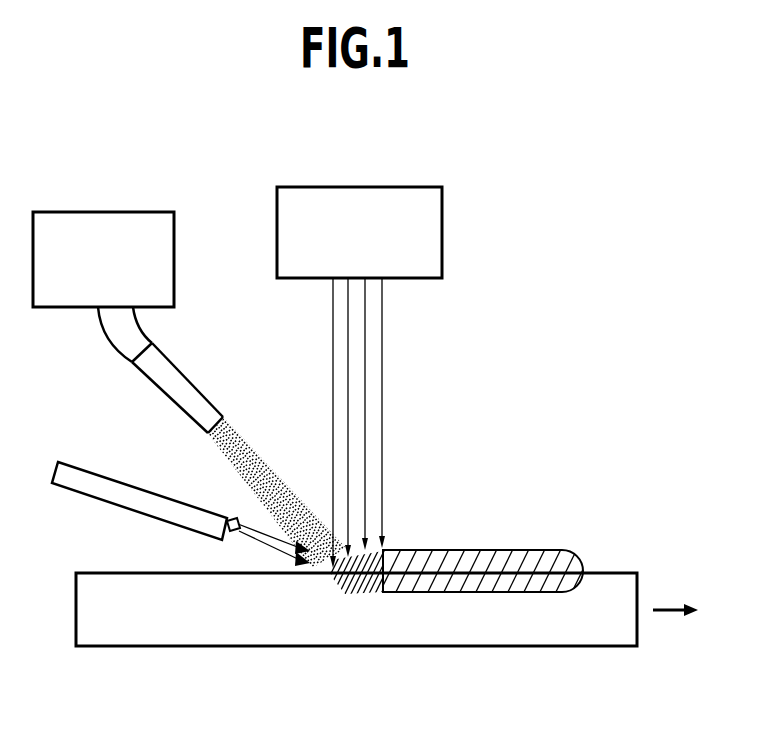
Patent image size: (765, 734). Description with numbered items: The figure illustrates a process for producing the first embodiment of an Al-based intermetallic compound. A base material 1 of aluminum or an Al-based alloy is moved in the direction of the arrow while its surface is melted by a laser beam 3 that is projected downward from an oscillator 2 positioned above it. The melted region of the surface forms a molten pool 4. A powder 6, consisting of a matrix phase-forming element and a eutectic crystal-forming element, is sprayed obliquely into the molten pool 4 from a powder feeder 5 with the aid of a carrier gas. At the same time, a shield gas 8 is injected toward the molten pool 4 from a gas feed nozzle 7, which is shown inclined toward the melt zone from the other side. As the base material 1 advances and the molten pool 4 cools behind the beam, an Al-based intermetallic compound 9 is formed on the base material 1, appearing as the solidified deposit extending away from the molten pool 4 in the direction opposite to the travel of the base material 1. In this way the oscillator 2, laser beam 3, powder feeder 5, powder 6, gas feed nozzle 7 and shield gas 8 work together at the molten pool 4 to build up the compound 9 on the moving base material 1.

The base material 1 is at (270, 636).
The oscillator 2 is at (422, 230).
The laser beam 3 is at (365, 352).
The molten pool 4 is at (362, 583).
The powder feeder 5 is at (106, 230).
The powder 6 is at (270, 477).
The gas feed nozzle 7 is at (107, 483).
The shield gas 8 is at (246, 528).
The Al-based intermetallic compound 9 is at (493, 562).